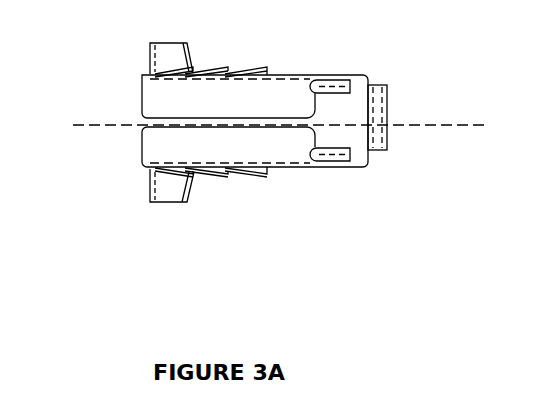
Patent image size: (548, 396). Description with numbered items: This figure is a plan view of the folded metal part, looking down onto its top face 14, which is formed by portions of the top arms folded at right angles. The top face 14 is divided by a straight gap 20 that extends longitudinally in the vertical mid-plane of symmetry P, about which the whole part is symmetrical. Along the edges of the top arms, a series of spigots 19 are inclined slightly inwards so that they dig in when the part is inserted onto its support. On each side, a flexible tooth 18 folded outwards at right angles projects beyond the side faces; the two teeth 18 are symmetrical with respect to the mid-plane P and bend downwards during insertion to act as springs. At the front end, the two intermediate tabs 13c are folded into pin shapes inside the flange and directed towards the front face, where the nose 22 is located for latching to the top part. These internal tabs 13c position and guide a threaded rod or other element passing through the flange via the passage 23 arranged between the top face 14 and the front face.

The top face 14 is at (268, 103).
The intermediate tabs 13c is at (330, 148).
The nose 22 is at (377, 108).
The flexible tooth 18 is at (163, 58).
The spigots 19 is at (225, 173).
The straight gap 20 is at (178, 123).
The passage 23 is at (353, 133).
The mid-plane of symmetry P is at (80, 122).